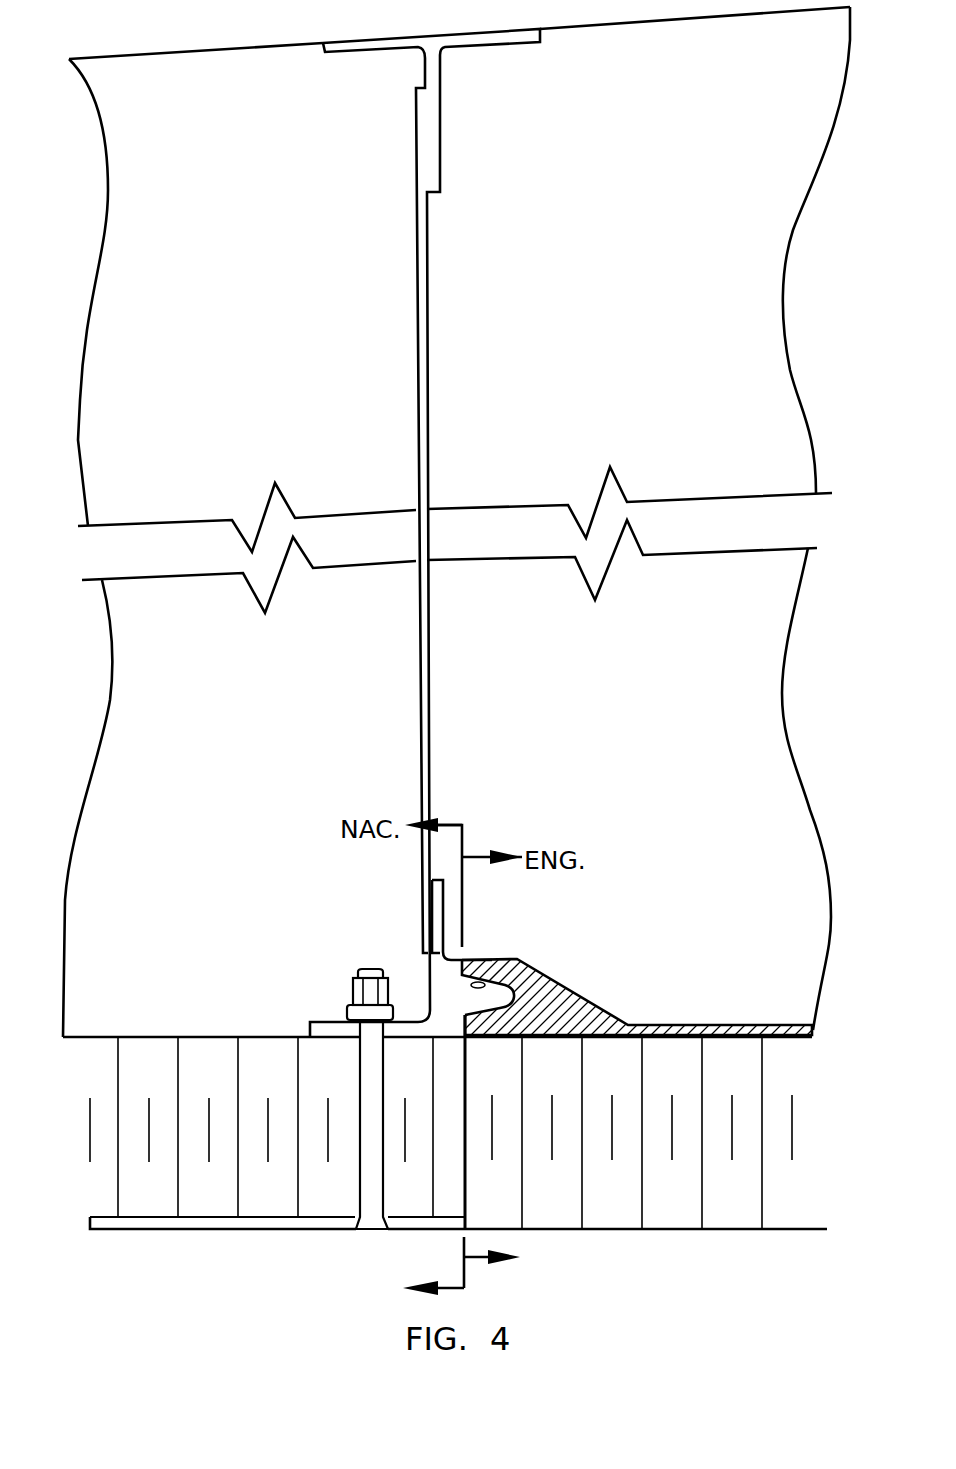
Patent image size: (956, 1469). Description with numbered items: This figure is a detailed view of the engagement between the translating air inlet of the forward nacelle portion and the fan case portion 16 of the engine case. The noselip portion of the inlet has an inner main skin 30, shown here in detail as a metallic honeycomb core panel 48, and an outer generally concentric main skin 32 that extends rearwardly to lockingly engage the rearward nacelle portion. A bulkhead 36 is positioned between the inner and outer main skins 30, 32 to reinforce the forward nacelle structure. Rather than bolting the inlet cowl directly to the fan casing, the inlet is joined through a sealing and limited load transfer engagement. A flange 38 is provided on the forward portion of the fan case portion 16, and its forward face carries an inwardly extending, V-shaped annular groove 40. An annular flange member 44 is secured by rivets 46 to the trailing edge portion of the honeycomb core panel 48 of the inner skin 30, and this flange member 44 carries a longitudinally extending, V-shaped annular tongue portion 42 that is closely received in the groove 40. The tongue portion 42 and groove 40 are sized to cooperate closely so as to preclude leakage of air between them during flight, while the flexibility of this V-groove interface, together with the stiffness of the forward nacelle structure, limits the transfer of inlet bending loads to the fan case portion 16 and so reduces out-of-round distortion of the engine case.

The fan case portion 16 is at (678, 1229).
The inner main skin 30 is at (283, 1233).
The outer main skin 32 is at (247, 25).
The bulkhead 36 is at (428, 343).
The flange 38 is at (568, 985).
The annular groove 40 is at (497, 960).
The tongue portion 42 is at (486, 1012).
The flange member 44 is at (445, 922).
The rivets 46 is at (387, 968).
The metallic honeycomb core panel 48 is at (193, 1036).